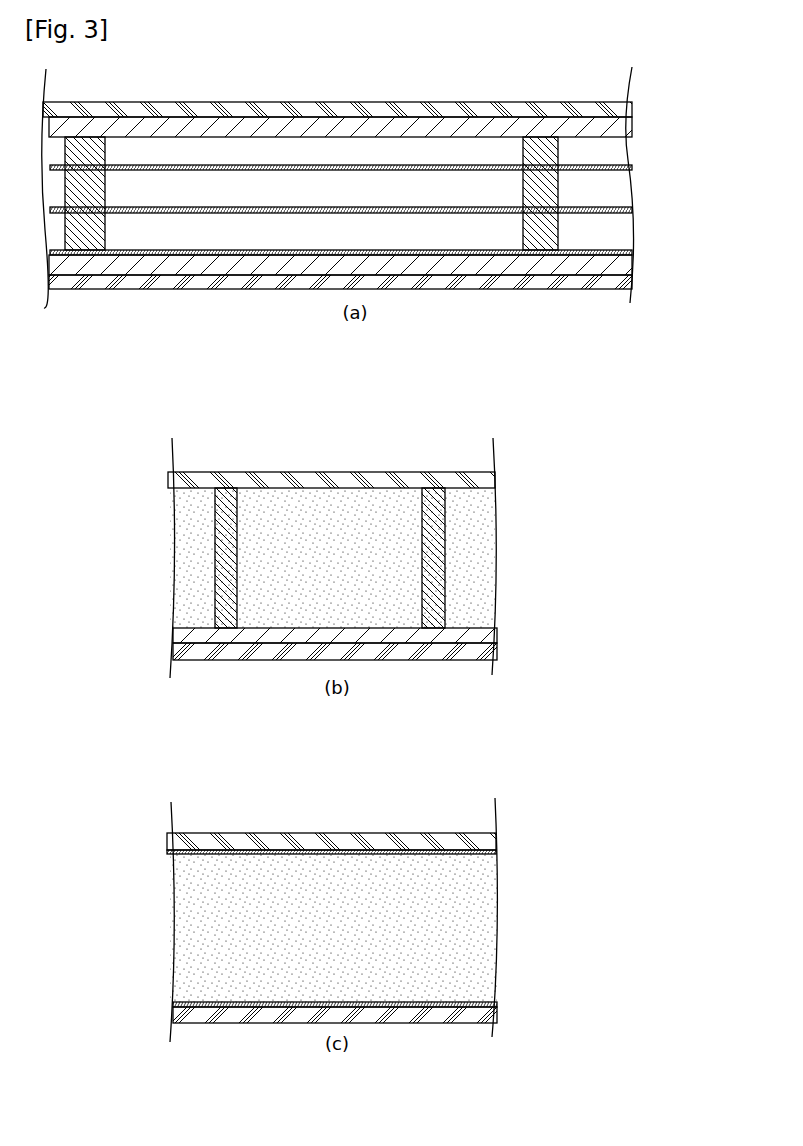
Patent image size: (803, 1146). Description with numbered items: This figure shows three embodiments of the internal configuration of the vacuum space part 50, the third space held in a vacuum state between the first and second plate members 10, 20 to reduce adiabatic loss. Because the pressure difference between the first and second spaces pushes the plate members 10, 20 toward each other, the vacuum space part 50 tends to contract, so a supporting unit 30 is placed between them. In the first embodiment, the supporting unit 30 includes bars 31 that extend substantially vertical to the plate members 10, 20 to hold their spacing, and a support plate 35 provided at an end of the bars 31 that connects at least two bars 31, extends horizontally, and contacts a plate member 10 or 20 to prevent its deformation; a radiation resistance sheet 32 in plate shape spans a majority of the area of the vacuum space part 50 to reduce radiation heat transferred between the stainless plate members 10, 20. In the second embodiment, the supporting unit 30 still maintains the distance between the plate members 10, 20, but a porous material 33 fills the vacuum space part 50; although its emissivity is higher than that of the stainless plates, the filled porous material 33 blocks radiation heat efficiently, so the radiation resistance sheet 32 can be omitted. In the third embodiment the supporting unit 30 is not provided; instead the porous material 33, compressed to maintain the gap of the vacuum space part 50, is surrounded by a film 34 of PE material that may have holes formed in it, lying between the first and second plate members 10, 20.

The first plate member 10 is at (301, 109).
The second plate member 20 is at (403, 285).
The supporting unit 30 is at (652, 263).
The bar 31 is at (558, 190).
The radiation resistance sheet 32 is at (193, 213).
The porous material 33 is at (485, 588).
The film 34 is at (478, 1003).
The support plate 35 is at (490, 125).
The vacuum space part 50 is at (416, 186).